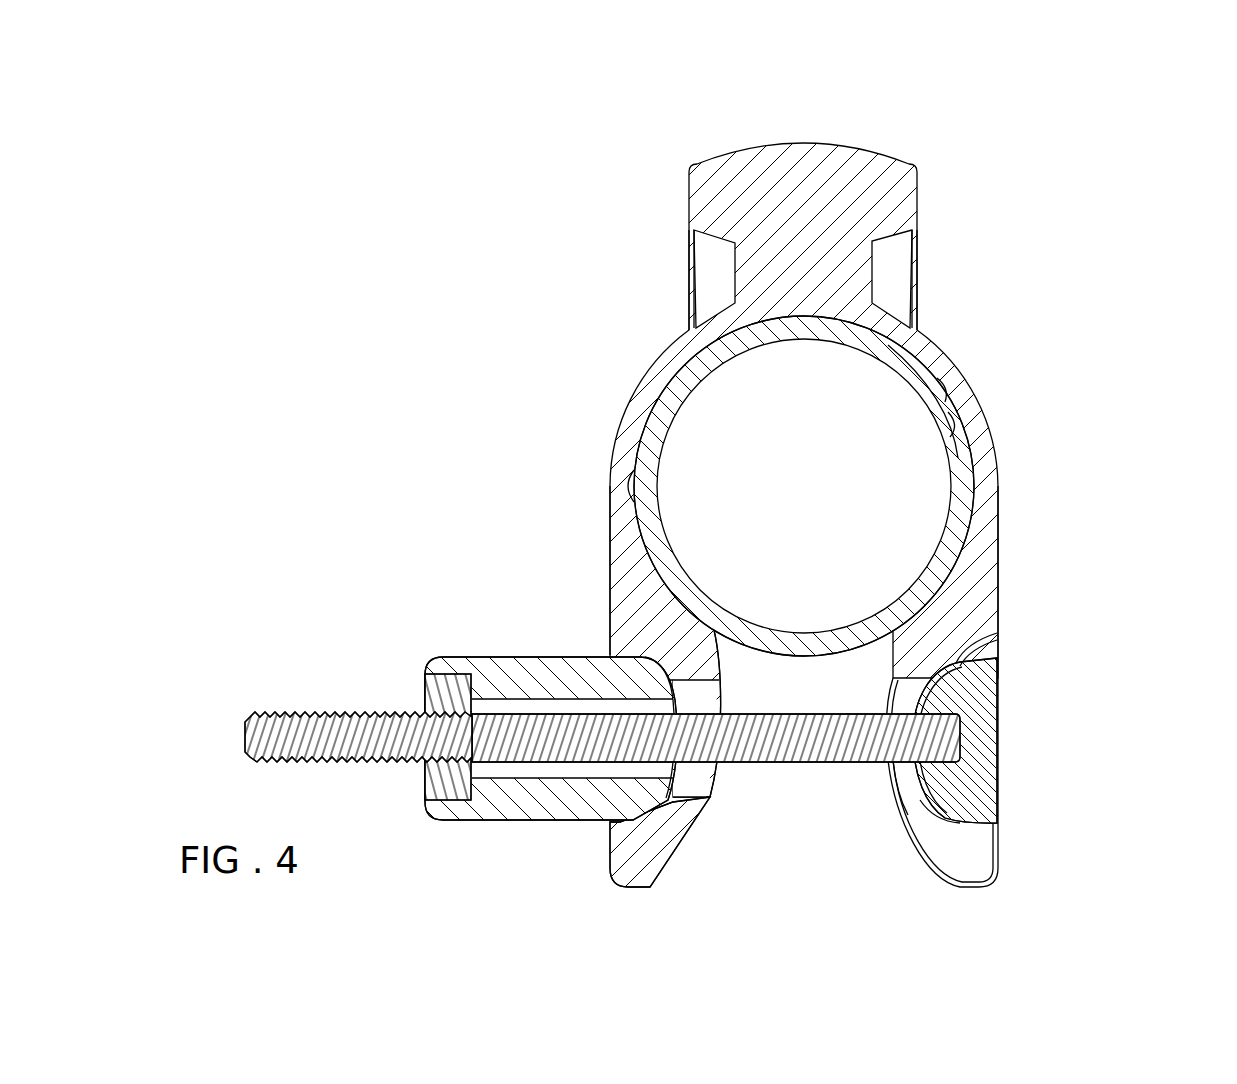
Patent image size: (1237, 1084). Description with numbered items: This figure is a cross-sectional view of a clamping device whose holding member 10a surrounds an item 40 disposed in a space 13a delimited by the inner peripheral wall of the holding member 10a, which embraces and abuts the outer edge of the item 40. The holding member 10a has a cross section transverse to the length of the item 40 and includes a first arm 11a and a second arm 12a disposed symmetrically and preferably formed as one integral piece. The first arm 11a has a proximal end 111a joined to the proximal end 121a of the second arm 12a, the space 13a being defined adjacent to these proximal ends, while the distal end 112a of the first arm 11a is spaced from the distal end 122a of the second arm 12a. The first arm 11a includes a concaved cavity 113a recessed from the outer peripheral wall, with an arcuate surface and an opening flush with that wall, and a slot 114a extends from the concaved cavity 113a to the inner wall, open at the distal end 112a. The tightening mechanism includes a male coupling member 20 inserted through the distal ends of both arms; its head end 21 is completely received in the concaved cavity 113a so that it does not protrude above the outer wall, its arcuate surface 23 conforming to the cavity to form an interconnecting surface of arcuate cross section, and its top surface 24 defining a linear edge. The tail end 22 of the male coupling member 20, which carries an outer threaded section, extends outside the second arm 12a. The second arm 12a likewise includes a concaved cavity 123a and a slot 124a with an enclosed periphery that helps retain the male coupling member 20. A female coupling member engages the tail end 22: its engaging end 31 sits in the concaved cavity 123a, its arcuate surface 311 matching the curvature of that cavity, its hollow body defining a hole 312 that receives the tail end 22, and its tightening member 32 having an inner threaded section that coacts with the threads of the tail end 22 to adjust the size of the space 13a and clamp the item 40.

The holding member 10a is at (834, 515).
The first arm 11a is at (993, 512).
The second arm 12a is at (630, 432).
The space 13a is at (957, 428).
The proximal end of the first arm 111a is at (958, 312).
The proximal end of the second arm 121a is at (640, 318).
The distal end of the first arm 112a is at (1032, 848).
The concaved cavity 113a is at (940, 800).
The slot 114a is at (908, 799).
The distal end of the second arm 122a is at (545, 848).
The concaved cavity 123a is at (640, 808).
The slot 124a is at (702, 782).
The male coupling member 20 is at (734, 707).
The head end 21 is at (1030, 680).
The tail end 22 is at (362, 680).
The arcuate surface 23 is at (985, 645).
The top surface 24 is at (1000, 740).
The engaging end 31 is at (517, 651).
The arcuate surface 311 is at (618, 645).
The hole 312 is at (572, 706).
The tightening member 32 is at (448, 762).
The item 40 is at (847, 486).